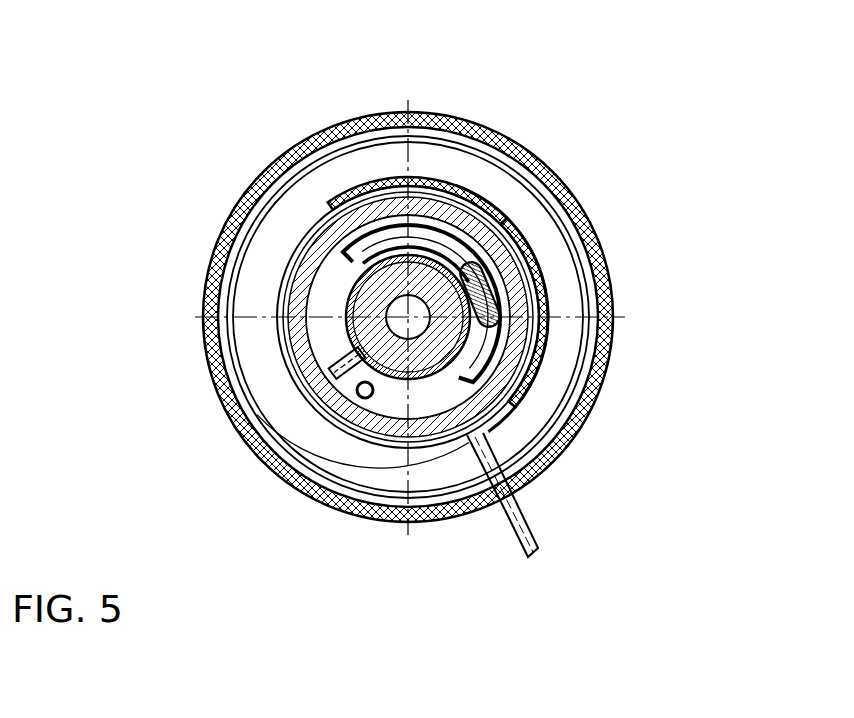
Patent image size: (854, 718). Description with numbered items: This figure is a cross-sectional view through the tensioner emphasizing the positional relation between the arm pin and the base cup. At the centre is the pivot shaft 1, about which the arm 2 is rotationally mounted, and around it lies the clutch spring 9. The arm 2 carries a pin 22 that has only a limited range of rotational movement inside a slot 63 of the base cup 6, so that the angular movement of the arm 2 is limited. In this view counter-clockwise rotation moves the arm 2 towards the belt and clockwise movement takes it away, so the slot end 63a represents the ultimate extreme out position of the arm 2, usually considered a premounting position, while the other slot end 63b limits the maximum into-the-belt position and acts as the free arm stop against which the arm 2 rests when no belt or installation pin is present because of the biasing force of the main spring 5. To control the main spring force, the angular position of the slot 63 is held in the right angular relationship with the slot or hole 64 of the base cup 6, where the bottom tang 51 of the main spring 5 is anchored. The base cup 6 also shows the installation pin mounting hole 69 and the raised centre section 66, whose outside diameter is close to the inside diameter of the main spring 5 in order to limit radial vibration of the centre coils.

The pivot shaft 1 is at (355, 266).
The arm 2 is at (268, 165).
The main spring 5 is at (540, 318).
The base cup 6 is at (280, 397).
The clutch spring 9 is at (350, 308).
The pin 22 is at (490, 282).
The bottom tang 51 is at (507, 517).
The slot 63 is at (440, 238).
The slot end 63a is at (520, 383).
The slot end 63b is at (372, 207).
The slot or hole 64 is at (540, 468).
The raised centre section 66 is at (295, 323).
The installation pin mounting hole 69 is at (363, 400).